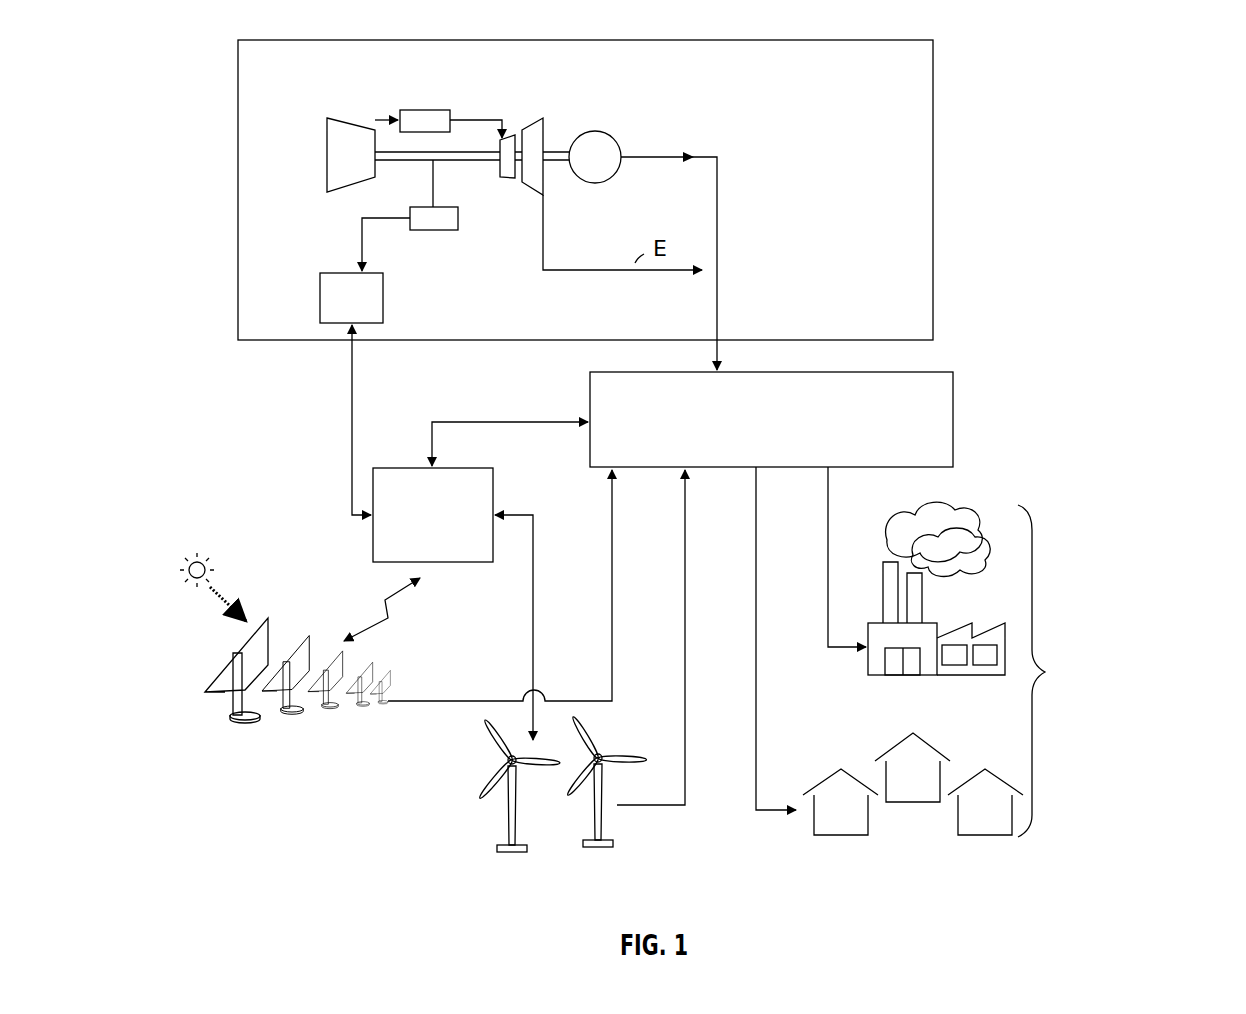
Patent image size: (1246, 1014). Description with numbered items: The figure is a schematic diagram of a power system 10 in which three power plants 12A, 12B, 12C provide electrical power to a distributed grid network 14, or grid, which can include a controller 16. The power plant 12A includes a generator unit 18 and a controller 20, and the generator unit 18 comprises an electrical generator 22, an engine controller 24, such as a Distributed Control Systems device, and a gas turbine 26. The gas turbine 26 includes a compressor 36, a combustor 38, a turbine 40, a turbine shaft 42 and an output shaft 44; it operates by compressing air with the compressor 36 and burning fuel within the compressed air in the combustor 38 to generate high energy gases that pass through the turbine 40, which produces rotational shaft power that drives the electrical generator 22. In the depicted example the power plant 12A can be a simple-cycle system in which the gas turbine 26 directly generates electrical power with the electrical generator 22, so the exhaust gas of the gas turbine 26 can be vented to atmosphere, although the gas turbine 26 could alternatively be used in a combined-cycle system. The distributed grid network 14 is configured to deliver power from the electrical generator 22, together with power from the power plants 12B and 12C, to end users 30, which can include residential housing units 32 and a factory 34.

The power system 10 is at (1122, 418).
The power plant 12A is at (933, 210).
The power plant 12B is at (386, 669).
The power plant 12C is at (490, 825).
The distributed grid network 14 is at (953, 420).
The controller 16 is at (497, 487).
The generator unit 18 is at (684, 126).
The controller 20 is at (318, 298).
The electrical generator 22 is at (597, 131).
The engine controller 24 is at (432, 235).
The gas turbine 26 is at (492, 183).
The end users 30 is at (1047, 671).
The residential housing units 32 is at (903, 847).
The factory 34 is at (878, 676).
The compressor 36 is at (340, 118).
The combustor 38 is at (430, 110).
The turbine 40 is at (508, 130).
The turbine shaft 42 is at (392, 162).
The output shaft 44 is at (555, 148).